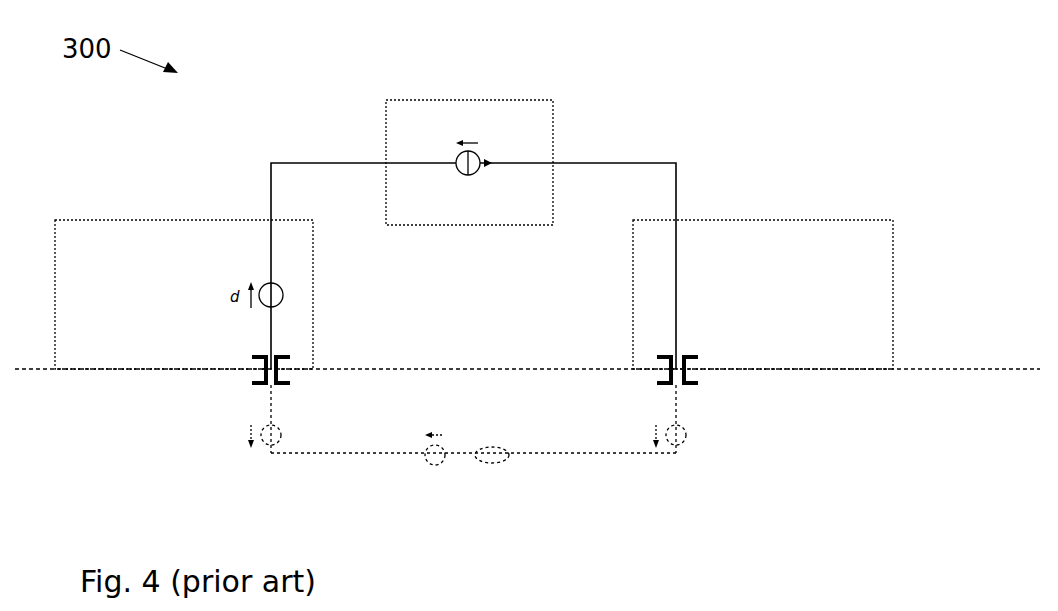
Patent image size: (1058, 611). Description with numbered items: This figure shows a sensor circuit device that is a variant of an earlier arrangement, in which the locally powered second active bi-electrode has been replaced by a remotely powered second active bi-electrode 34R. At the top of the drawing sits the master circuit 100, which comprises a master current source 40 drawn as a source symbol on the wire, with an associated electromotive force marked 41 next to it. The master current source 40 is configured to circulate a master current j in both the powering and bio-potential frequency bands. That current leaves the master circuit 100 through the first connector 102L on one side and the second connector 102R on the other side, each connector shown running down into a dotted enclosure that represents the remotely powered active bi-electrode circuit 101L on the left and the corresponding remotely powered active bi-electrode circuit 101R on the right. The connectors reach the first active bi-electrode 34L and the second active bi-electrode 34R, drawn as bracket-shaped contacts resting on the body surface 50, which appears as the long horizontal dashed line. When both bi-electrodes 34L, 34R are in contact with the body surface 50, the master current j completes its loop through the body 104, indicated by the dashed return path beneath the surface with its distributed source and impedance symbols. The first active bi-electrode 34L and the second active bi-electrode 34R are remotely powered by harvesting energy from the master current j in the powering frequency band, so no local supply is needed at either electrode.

The body surface 50 is at (467, 368).
The master circuit 100 is at (538, 100).
The remotely powered active bi-electrode circuit 101L is at (78, 220).
The remotely powered active bi-electrode circuit 101R is at (848, 220).
The first connector 102L is at (304, 162).
The second connector 102R is at (649, 162).
The master current source 40 is at (466, 176).
The electromotive force E 41 is at (471, 150).
The first active bi-electrode 34L is at (245, 378).
The second active bi-electrode 34R is at (703, 378).
The body 104 is at (558, 452).